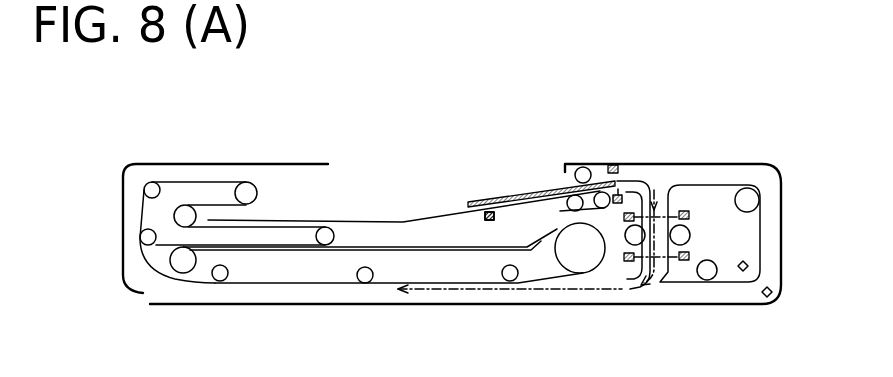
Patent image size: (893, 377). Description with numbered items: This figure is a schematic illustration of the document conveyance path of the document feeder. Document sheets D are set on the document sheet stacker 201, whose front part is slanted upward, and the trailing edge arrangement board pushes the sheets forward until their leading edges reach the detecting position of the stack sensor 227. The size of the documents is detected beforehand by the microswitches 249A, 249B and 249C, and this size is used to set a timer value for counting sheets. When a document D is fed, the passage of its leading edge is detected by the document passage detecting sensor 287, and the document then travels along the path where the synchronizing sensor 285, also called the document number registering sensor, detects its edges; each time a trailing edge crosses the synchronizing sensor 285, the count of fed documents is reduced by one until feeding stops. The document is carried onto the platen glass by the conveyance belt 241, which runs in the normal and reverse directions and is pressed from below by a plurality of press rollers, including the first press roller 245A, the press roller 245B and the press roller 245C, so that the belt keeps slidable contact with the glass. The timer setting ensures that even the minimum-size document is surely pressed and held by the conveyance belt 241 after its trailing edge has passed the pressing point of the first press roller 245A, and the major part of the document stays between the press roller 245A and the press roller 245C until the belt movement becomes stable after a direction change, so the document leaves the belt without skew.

The document sheet stacker 201 is at (382, 222).
The conveyance belt 241 is at (270, 283).
The first press roller 245A is at (505, 273).
The press roller 245B is at (365, 283).
The press roller 245C is at (220, 281).
The microswitch 249A is at (451, 150).
The microswitch 249B is at (451, 164).
The microswitch 249C is at (485, 216).
The document sheet D is at (533, 191).
The stack sensor 227 is at (613, 165).
The document passage detecting sensor 287 is at (684, 210).
The synchronizing sensor 285 is at (684, 262).